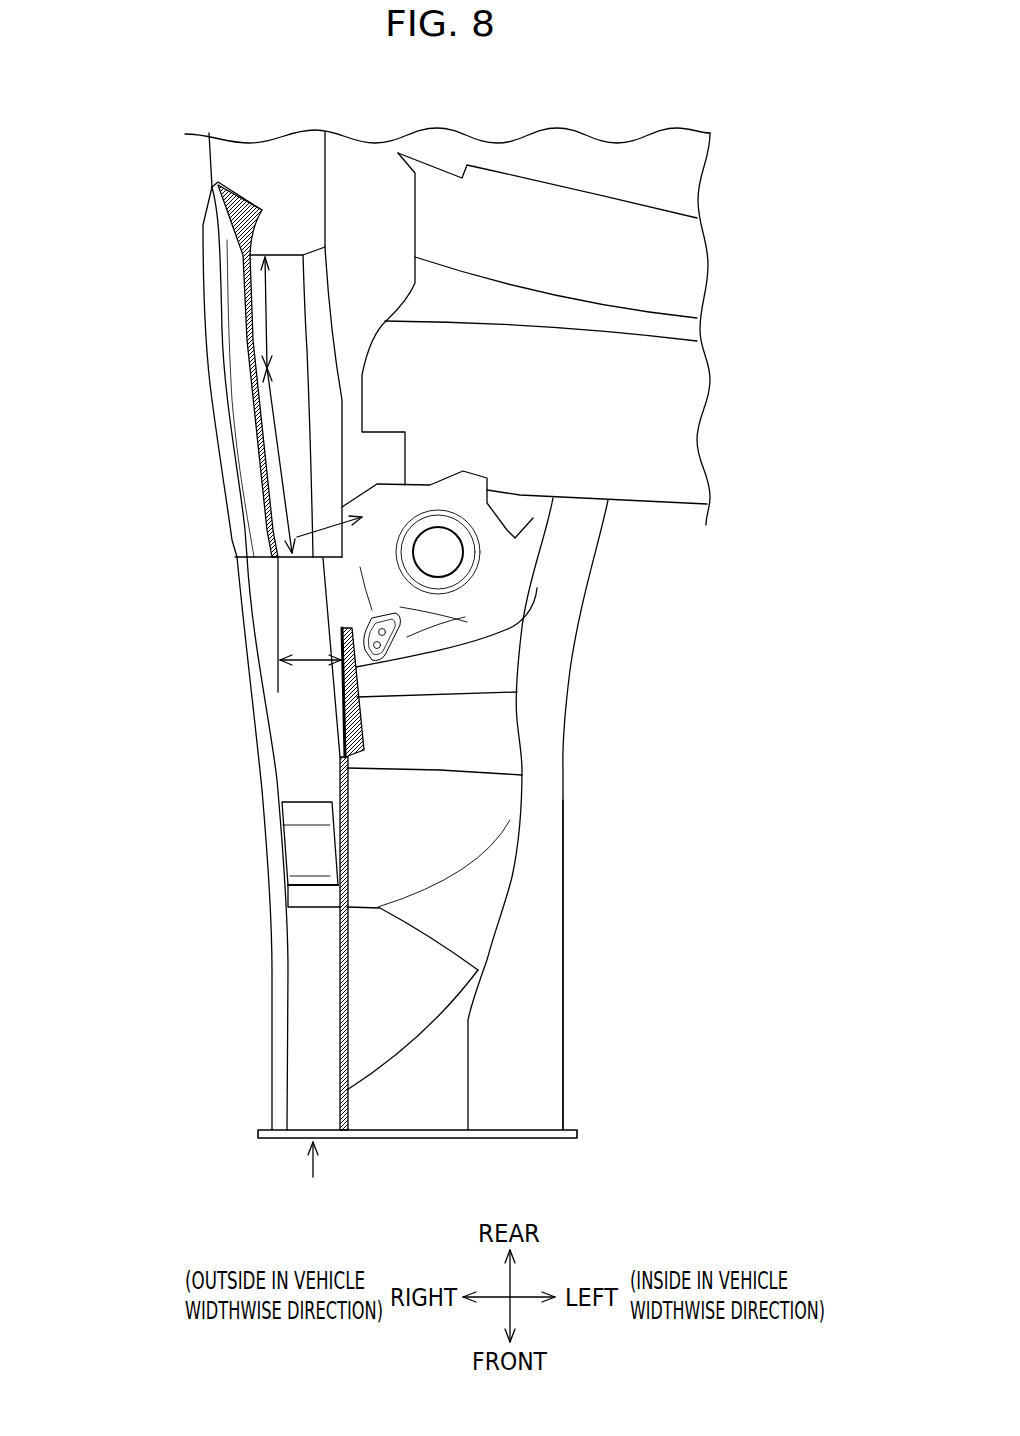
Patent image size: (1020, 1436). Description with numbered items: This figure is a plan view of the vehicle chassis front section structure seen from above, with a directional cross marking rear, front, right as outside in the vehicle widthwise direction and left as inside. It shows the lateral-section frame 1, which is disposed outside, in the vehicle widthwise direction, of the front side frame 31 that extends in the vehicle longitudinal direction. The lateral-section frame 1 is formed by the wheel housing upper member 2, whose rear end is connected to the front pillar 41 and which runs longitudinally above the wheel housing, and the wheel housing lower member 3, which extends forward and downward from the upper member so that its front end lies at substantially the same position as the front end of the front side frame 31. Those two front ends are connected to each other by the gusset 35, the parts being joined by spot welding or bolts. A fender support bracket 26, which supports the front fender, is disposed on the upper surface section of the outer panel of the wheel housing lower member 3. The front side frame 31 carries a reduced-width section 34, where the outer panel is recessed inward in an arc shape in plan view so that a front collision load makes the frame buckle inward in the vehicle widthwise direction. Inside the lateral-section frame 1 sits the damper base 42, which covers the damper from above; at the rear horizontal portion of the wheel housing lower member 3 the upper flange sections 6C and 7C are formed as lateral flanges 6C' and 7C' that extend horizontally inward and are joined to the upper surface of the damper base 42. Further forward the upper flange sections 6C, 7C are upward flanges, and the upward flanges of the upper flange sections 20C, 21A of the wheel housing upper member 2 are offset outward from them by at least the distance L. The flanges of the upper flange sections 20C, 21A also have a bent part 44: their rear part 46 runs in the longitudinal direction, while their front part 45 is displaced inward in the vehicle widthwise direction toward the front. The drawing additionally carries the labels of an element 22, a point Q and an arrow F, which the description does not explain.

The lateral-section frame 1 is at (215, 633).
The wheel housing upper member 2 is at (160, 388).
The wheel housing lower member 3 is at (248, 802).
The upper flange section 6C is at (240, 943).
The upper flange section 7C is at (240, 943).
The lateral flange 6C' is at (521, 692).
The lateral flange 7C' is at (521, 692).
The upper flange section 20C is at (260, 485).
The upper flange section 21A is at (165, 371).
The roof side inner member 22 is at (383, 457).
The fender support bracket 26 is at (307, 850).
The front side frame 31 is at (565, 952).
The reduced-width section 34 is at (523, 797).
The gusset 35 is at (408, 1108).
The front pillar 41 is at (233, 163).
The damper base 42 is at (503, 603).
The bent part 44 is at (262, 347).
The front part 45 is at (287, 460).
The rear part 46 is at (282, 312).
The distance L is at (310, 648).
The point Q is at (337, 534).
The load F is at (314, 1174).